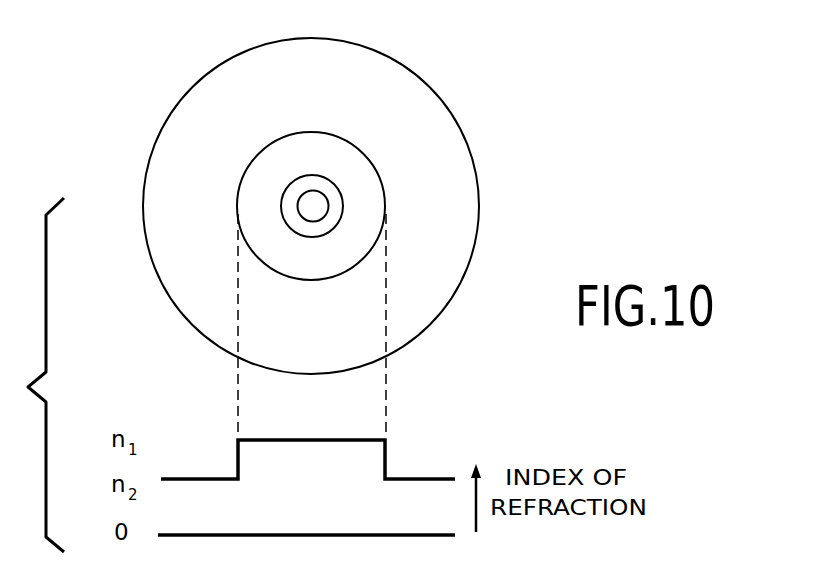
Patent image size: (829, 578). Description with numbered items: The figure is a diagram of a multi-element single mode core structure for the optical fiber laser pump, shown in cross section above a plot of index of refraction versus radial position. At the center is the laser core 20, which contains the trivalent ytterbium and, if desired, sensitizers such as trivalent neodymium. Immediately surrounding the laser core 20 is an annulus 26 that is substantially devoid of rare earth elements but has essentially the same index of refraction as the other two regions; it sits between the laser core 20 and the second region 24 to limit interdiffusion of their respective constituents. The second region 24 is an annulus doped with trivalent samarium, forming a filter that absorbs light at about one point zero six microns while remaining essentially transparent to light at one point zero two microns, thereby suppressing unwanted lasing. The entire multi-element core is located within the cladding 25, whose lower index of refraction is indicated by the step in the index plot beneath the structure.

The laser core 20 is at (313, 206).
The annulus 26 is at (335, 192).
The second region 24 is at (363, 217).
The cladding 25 is at (418, 290).